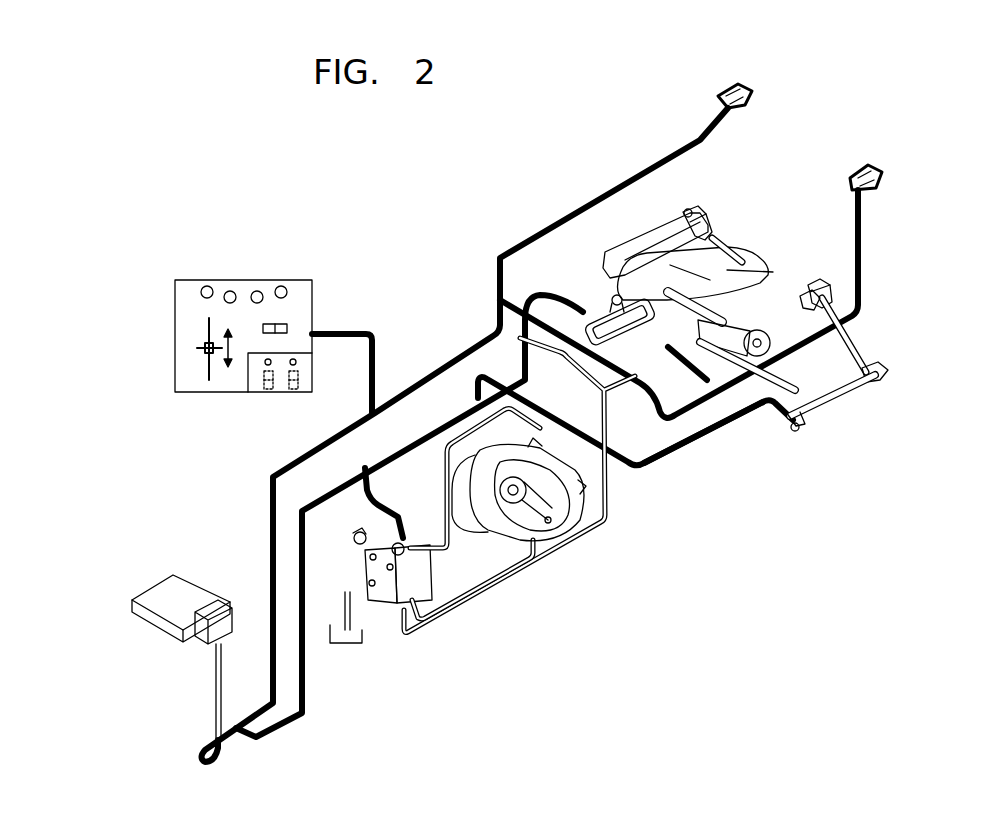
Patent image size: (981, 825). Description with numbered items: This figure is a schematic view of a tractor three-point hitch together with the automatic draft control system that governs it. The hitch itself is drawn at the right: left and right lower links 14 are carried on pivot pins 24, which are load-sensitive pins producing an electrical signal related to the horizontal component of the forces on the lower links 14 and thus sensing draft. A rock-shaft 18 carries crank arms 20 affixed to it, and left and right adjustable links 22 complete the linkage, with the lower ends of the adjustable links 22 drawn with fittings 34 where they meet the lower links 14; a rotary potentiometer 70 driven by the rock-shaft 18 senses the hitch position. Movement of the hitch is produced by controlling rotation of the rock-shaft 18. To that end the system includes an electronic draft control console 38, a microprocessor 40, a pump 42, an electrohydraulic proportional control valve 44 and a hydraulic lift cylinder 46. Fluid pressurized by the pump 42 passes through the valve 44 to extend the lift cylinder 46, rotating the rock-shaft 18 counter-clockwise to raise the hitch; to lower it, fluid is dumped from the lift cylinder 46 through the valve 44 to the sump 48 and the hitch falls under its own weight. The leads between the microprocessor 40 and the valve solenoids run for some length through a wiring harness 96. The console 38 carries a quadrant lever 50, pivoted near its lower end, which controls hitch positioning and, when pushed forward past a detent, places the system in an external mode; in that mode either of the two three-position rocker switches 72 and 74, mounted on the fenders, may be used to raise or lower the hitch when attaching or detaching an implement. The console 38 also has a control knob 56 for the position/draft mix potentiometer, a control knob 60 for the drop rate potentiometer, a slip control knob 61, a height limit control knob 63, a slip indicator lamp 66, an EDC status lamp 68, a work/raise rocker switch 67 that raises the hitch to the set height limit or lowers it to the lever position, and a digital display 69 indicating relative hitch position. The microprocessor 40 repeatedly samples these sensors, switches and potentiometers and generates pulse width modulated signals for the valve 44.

The lower links 14 is at (748, 372).
The rock-shaft 18 is at (771, 345).
The crank arms 20 is at (690, 209).
The adjustable links 22 is at (723, 237).
The pivot pins 24 is at (752, 420).
The clamp foot 34 is at (806, 292).
The electronic draft control console 38 is at (330, 290).
The microprocessor 40 is at (205, 570).
The pump 42 is at (556, 432).
The electrohydraulic proportional control valve 44 is at (354, 562).
The hydraulic lift cylinder 46 is at (606, 305).
The sump 48 is at (366, 632).
The quadrant lever 50 is at (197, 348).
The control knob 56 is at (257, 291).
The control knob 60 is at (283, 287).
The slip control knob 61 is at (205, 286).
The height limit control knob 63 is at (229, 291).
The slip indicator lamp 66 is at (266, 365).
The work/raise rocker switch 67 is at (288, 329).
The EDC status lamp 68 is at (296, 361).
The digital display 69 is at (312, 394).
The rotary potentiometer 70 is at (610, 257).
The three-position rocker switch 72 is at (750, 100).
The three-position rocker switch 74 is at (878, 178).
The wiring harness 96 is at (367, 465).